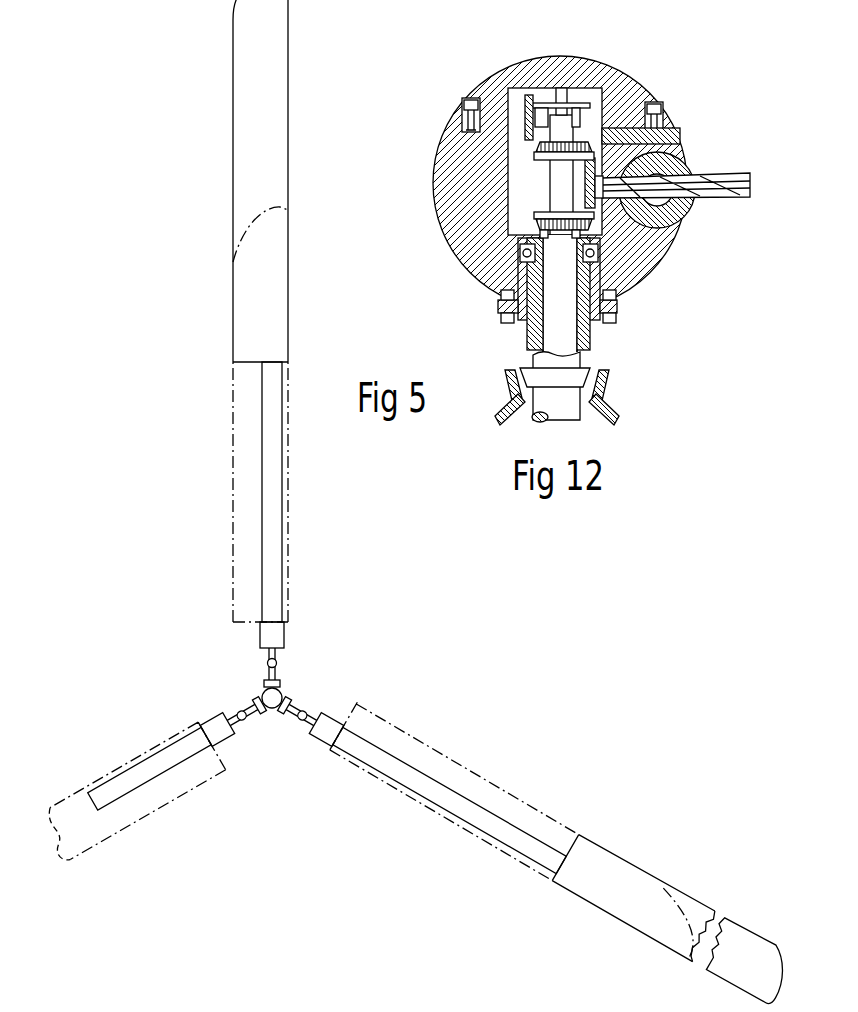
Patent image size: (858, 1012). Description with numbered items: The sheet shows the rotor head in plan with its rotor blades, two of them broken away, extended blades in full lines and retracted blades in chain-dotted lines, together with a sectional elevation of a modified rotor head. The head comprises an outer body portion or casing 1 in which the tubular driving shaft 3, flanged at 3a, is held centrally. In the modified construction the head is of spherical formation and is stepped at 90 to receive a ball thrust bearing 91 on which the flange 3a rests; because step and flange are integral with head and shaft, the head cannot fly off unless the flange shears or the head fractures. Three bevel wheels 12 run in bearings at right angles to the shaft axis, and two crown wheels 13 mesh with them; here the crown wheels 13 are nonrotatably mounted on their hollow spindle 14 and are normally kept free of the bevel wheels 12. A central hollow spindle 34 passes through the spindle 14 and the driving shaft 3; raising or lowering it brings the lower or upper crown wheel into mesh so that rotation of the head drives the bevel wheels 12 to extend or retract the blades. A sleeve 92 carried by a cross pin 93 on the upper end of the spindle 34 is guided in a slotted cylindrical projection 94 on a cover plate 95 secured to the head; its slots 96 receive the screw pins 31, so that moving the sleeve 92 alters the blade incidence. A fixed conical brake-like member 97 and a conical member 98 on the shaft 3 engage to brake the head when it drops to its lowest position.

In FIG. 5, the outer body portion or casing 1 is at (276, 694).
In FIG. 12, the driving shaft 3 is at (527, 328).
In FIG. 12, the flange 3a is at (563, 233).
In FIG. 12, the bevel wheels 12 is at (596, 204).
In FIG. 12, the crown wheels 13 is at (537, 220).
In FIG. 12, the hollow spindle 14 is at (565, 232).
In FIG. 12, the screw pin 31 is at (612, 112).
In FIG. 12, the central hollow spindle 34 is at (565, 95).
In FIG. 12, the step 90 is at (515, 258).
In FIG. 12, the ball thrust bearing 91 is at (523, 250).
In FIG. 12, the sleeve 92 is at (587, 102).
In FIG. 12, the cross pin 93 is at (553, 95).
In FIG. 12, the slotted cylindrical projection 94 is at (542, 92).
In FIG. 12, the cover plate 95 is at (633, 102).
In FIG. 12, the slots 96 is at (592, 130).
In FIG. 12, the fixed conical brake-like member 97 is at (507, 382).
In FIG. 12, the conical member 98 is at (580, 375).